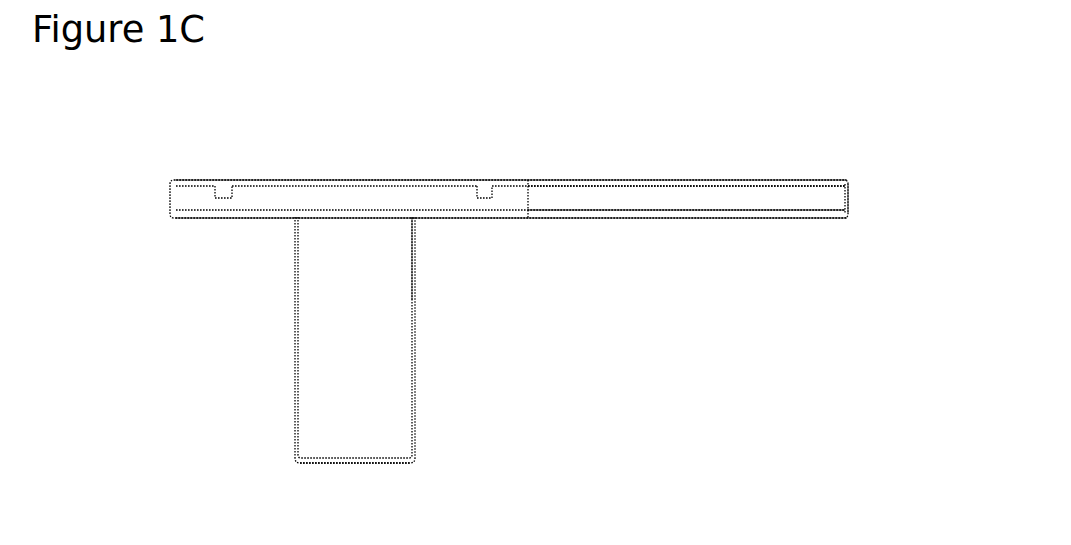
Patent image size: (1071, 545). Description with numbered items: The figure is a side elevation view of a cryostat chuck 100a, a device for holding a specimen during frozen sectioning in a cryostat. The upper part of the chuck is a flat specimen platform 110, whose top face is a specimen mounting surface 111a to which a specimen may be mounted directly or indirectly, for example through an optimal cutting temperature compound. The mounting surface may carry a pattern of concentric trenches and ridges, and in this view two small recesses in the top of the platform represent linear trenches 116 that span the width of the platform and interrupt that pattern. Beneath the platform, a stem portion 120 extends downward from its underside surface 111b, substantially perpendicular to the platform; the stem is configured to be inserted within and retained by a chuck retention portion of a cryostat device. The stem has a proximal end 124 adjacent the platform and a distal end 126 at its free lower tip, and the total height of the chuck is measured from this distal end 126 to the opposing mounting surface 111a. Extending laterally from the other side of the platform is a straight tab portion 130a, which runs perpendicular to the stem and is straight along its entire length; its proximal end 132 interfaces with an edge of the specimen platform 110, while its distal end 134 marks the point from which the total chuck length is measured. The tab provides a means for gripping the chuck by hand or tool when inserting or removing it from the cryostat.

The cryostat chuck 100a is at (822, 90).
The specimen platform 110 is at (358, 190).
The specimen mounting surface 111a is at (250, 178).
The underside surface 111b is at (252, 222).
The linear trench 116 is at (210, 188).
The stem portion 120 is at (315, 373).
The proximal end of stem portion 124 is at (413, 217).
The distal end of stem portion 126 is at (375, 462).
The straight tab portion 130a is at (687, 200).
The proximal end of straight tab portion 132 is at (531, 216).
The distal end of tab portion 134 is at (849, 199).